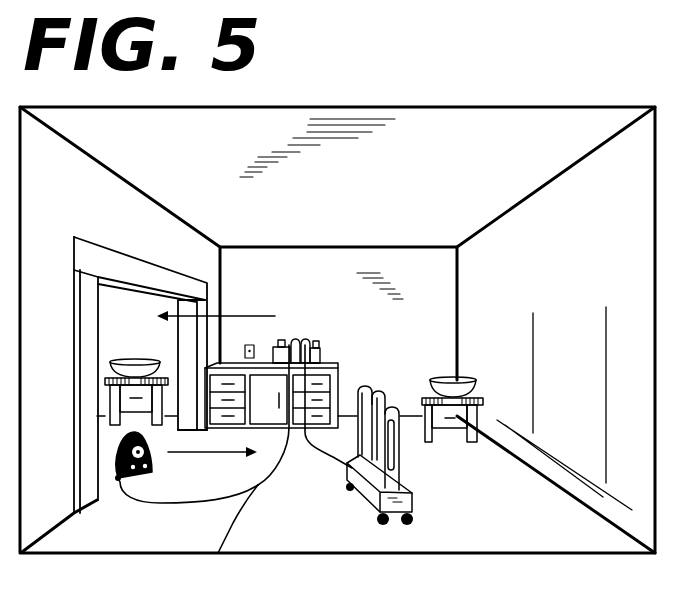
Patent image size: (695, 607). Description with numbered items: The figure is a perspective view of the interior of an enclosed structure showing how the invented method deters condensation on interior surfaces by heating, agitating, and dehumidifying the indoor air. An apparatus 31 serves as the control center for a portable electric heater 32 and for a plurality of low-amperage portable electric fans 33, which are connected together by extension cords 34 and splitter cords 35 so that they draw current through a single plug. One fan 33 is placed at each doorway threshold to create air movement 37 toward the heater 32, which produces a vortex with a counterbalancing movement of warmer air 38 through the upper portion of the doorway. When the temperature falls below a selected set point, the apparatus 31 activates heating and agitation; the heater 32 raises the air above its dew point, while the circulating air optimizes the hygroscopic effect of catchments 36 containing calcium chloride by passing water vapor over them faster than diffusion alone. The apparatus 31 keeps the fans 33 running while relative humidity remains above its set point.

The apparatus 31 is at (327, 340).
The portable electric heater 32 is at (398, 467).
The low-amperage portable electric fan 33 is at (152, 470).
The extension cord 34 is at (285, 457).
The splitter cord 35 is at (265, 486).
The catchment 36 is at (133, 358).
The air movement 37 is at (200, 453).
The counterbalancing movement of warmer air 38 is at (233, 316).